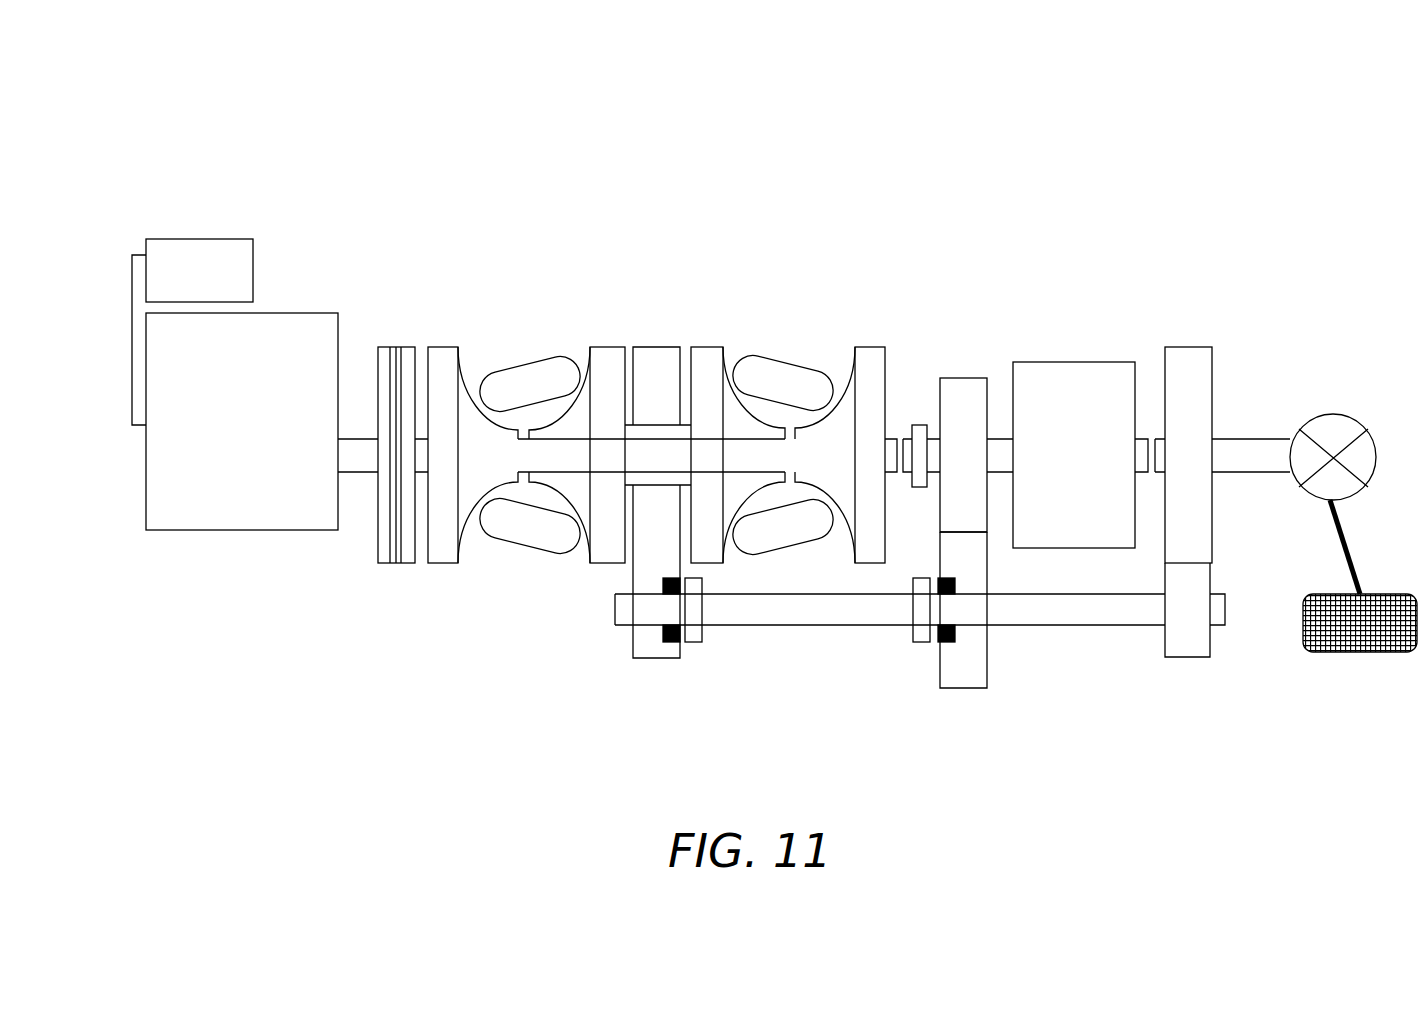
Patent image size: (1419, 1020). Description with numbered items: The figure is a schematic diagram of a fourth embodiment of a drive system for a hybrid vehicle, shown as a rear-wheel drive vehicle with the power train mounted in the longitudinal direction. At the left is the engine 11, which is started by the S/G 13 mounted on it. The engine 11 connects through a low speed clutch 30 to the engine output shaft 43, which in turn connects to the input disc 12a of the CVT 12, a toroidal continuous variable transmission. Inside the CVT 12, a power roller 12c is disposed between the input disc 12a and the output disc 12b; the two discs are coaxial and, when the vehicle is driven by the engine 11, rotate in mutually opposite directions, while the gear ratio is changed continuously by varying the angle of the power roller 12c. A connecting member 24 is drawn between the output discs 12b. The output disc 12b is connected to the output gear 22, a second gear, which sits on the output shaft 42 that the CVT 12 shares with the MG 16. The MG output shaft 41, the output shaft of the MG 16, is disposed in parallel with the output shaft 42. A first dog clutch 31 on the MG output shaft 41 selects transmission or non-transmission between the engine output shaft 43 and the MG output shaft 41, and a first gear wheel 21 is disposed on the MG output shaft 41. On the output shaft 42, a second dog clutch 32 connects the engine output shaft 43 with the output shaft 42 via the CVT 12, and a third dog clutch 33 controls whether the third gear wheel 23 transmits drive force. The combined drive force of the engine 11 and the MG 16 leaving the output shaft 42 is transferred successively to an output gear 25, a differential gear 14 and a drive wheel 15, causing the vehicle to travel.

The engine 11 is at (238, 517).
The S/G 13 is at (237, 256).
The low speed clutch 30 is at (396, 347).
The CVT 12 is at (481, 575).
The input disc 12a is at (445, 352).
The output disc 12b is at (612, 352).
The power roller 12c is at (523, 372).
The connecting member 24 is at (657, 352).
The engine output shaft 43 is at (896, 438).
The first dog clutch 31 is at (918, 426).
The first gear wheel 21 is at (975, 387).
The MG output shaft 41 is at (1000, 440).
The MG 16 is at (1103, 382).
The output gear 25 is at (1183, 652).
The differential gear 14 is at (1348, 487).
The drive wheel 15 is at (1310, 654).
The output shaft 42 is at (629, 610).
The output gear 22 is at (640, 642).
The second dog clutch 32 is at (697, 643).
The third dog clutch 33 is at (918, 643).
The third gear wheel 23 is at (975, 672).